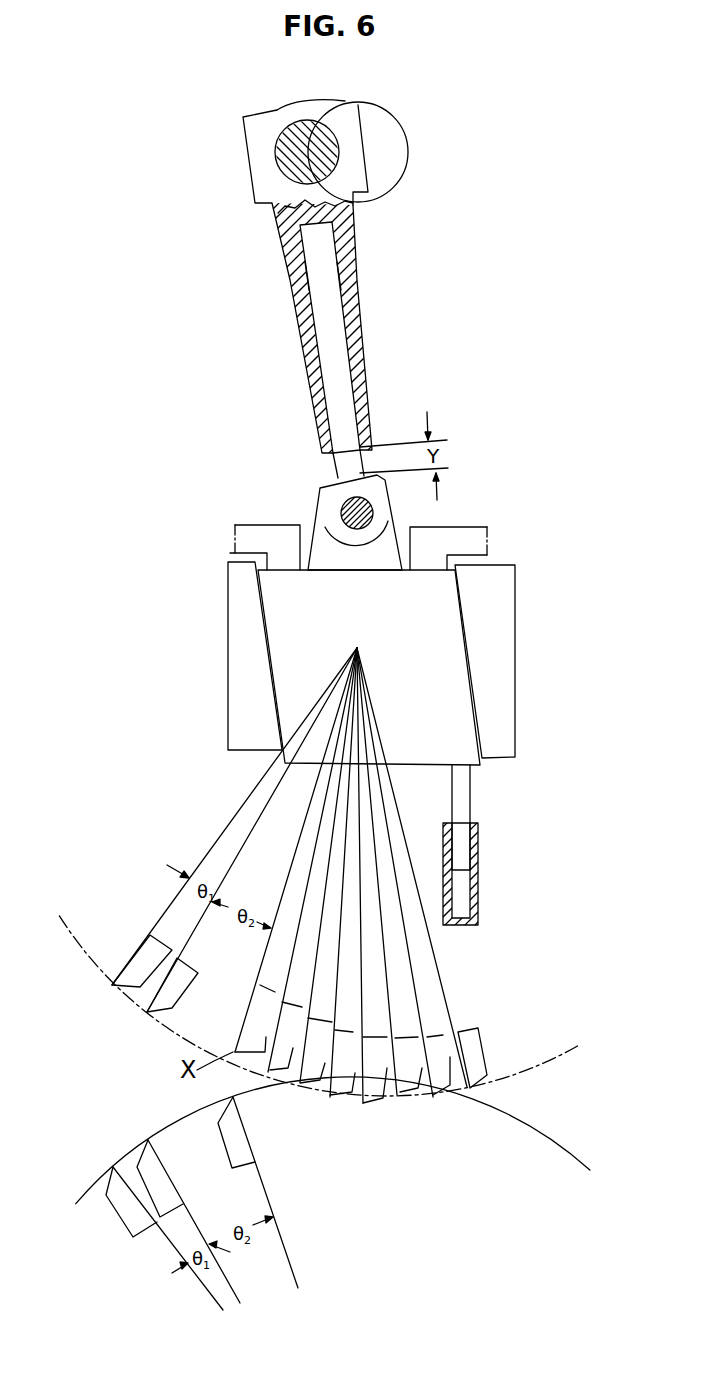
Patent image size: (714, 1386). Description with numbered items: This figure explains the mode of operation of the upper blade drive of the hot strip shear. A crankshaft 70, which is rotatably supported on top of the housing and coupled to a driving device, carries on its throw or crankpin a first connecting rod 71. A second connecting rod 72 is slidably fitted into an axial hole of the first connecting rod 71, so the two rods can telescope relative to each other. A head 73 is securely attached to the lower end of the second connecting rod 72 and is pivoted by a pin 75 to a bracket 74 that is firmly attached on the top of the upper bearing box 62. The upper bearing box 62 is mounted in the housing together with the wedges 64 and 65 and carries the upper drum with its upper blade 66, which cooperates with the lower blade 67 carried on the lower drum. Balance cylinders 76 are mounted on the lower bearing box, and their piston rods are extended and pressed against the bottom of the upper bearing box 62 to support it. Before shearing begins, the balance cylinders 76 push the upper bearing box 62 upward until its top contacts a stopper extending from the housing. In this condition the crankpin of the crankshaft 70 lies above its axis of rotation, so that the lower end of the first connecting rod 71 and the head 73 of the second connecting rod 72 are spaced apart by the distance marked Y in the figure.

The upper bearing box 62 is at (457, 687).
The wedge 64 is at (242, 662).
The wedge 65 is at (502, 597).
The upper blade 66 is at (133, 960).
The lower blade 67 is at (230, 1138).
The crankshaft 70 is at (287, 130).
The first connecting rod 71 is at (290, 250).
The second connecting rod 72 is at (332, 297).
The head 73 is at (330, 520).
The bracket 74 is at (328, 548).
The pin 75 is at (330, 482).
The balance cylinder 76 is at (462, 793).